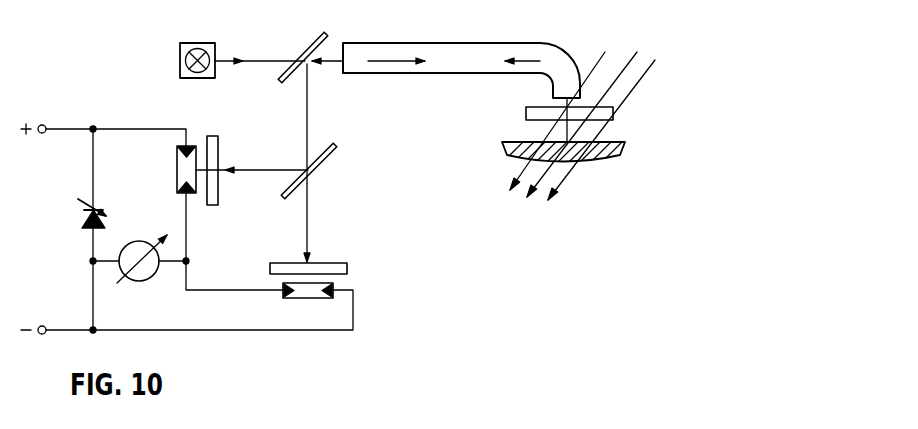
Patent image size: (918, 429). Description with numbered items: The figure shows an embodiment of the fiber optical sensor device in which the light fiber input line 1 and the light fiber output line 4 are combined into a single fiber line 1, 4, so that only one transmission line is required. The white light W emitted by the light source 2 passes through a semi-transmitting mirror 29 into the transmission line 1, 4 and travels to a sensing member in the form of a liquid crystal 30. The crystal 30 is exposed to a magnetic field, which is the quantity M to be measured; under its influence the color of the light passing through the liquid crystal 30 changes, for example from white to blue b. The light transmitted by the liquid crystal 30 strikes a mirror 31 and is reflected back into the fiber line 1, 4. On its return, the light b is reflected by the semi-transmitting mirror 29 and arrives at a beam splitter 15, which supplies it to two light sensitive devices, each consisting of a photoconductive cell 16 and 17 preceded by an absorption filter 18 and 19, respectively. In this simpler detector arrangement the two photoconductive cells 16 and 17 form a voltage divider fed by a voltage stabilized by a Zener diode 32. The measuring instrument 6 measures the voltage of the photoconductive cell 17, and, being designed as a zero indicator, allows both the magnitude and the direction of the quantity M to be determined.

The light source 2 is at (186, 43).
The semi-transmitting mirror 29 is at (315, 46).
The light fiber input line 1 is at (461, 52).
The light fiber output line 4 is at (453, 55).
The white light W is at (229, 62).
The blue light b is at (543, 60).
The quantity to be measured M is at (626, 80).
The liquid crystal 30 is at (614, 113).
The mirror 31 is at (625, 146).
The beam splitter 15 is at (330, 145).
The photoconductive cell 16 is at (187, 146).
The absorption filter 18 is at (212, 137).
The absorption filter 19 is at (348, 268).
The photoconductive cell 17 is at (335, 288).
The measuring instrument 6 is at (137, 255).
The Zener diode 32 is at (83, 220).